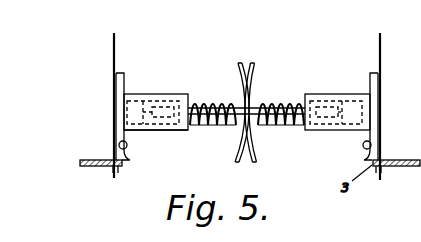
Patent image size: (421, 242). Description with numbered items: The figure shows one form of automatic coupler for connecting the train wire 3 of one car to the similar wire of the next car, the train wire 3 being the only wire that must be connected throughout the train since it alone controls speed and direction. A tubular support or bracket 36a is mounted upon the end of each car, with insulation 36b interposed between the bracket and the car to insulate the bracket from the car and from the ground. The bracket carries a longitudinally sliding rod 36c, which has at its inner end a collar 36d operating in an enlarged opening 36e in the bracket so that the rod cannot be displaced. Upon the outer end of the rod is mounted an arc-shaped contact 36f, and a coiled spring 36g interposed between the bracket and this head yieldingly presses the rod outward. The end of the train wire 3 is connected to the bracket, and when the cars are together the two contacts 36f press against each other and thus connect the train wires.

The train wire 3 is at (124, 168).
The tubular support or bracket 36a is at (162, 131).
The insulation 36b is at (124, 75).
The longitudinally sliding rod 36c is at (205, 101).
The collar 36d is at (152, 104).
The enlarged opening 36e is at (138, 93).
The arc-shaped contact 36f is at (239, 63).
The coiled spring 36g is at (225, 127).